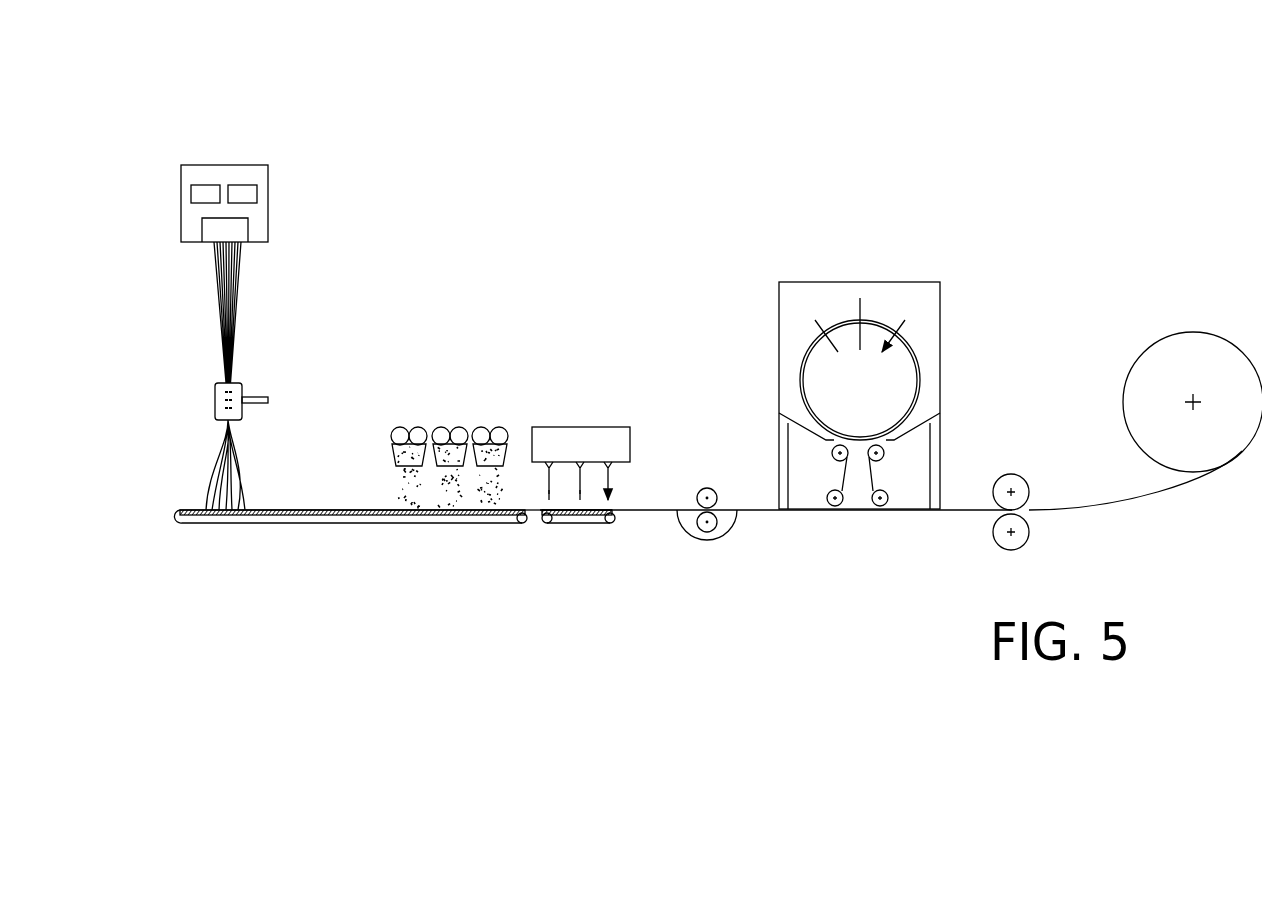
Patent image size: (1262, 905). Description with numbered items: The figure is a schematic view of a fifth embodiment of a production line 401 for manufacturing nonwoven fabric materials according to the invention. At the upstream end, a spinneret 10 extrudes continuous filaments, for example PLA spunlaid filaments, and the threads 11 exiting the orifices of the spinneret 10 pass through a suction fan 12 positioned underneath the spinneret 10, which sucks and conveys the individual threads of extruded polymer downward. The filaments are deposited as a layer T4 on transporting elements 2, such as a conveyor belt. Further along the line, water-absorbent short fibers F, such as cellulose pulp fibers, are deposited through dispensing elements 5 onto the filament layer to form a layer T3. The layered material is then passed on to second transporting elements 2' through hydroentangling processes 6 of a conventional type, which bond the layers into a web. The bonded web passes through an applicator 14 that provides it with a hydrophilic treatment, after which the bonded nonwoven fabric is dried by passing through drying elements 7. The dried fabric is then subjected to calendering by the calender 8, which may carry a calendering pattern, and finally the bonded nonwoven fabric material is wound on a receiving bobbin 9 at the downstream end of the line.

The production line 401 is at (562, 126).
The spinneret 10 is at (270, 228).
The threads 11 is at (240, 340).
The suction fan 12 is at (215, 397).
The layer of continuous filaments T4 is at (254, 510).
The transporting elements 2 is at (350, 564).
The dispensing elements 5 is at (497, 420).
The short fibers F is at (502, 476).
The hydroentangling processes 6 is at (573, 425).
The layer of short fibers T3 is at (506, 506).
The second transporting elements 2' is at (578, 569).
The applicator 14 is at (706, 481).
The drying elements 7 is at (947, 325).
The calender 8 is at (1023, 470).
The receiving bobbin 9 is at (1218, 332).